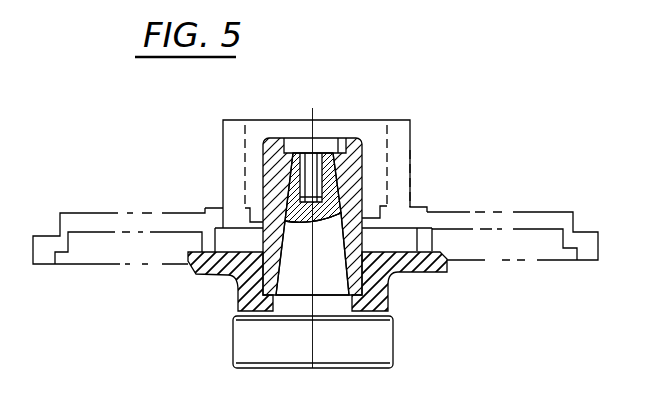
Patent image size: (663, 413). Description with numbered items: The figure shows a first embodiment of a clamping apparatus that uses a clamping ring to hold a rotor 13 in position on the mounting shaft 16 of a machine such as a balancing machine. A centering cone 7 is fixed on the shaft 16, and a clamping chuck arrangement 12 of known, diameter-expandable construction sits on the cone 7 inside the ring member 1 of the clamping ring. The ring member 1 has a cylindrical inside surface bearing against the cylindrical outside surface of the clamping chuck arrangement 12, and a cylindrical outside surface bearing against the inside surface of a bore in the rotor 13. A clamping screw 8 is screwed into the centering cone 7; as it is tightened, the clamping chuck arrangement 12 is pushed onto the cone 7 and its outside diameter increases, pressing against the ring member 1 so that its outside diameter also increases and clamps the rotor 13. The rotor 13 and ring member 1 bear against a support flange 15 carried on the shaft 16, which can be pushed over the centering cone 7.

The ring member 1 is at (390, 240).
The centering cone 7 is at (300, 271).
The clamping screw 8 is at (298, 140).
The clamping chuck arrangement 12 is at (345, 146).
The rotor 13 is at (533, 217).
The support flange 15 is at (389, 284).
The mounting shaft 16 is at (382, 342).